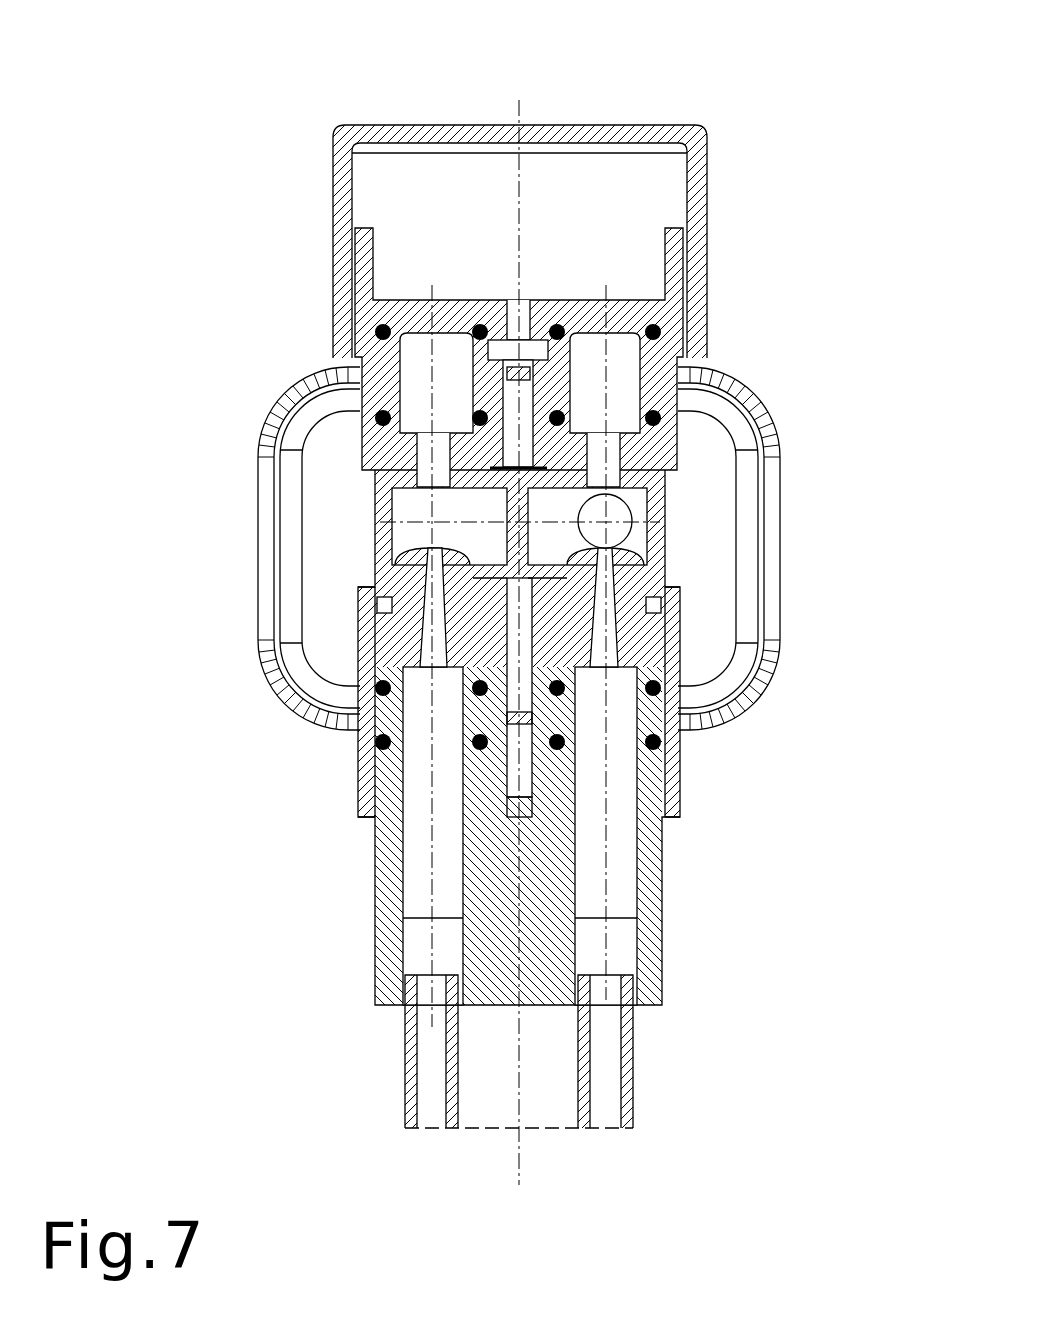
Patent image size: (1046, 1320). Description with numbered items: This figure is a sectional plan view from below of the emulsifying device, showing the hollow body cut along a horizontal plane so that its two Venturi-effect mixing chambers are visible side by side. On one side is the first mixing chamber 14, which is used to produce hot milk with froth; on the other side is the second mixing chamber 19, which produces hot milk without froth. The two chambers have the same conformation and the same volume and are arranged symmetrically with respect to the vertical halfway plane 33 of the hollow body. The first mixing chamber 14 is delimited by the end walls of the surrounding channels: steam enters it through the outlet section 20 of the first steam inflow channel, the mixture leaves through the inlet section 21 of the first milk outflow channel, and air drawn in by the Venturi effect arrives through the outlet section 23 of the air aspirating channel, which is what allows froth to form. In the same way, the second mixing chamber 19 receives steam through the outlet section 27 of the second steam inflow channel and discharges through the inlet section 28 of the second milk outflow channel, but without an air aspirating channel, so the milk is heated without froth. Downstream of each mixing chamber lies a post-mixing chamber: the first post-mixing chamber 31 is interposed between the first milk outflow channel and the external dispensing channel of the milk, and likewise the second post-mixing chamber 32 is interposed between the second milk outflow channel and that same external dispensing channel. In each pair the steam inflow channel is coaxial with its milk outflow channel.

The first mixing chamber 14 is at (548, 547).
The second mixing chamber 19 is at (420, 533).
The outlet section of the first steam inflow channel 20 is at (565, 553).
The inlet section of the first milk outflow channel 21 is at (606, 488).
The outlet section of the air aspirating channel 23 is at (633, 533).
The outlet section of the second steam inflow channel 27 is at (357, 722).
The inlet section of the second milk outflow channel 28 is at (418, 530).
The first post-mixing chamber 31 is at (622, 383).
The second post-mixing chamber 32 is at (420, 388).
The vertical halfway plane 33 is at (515, 522).